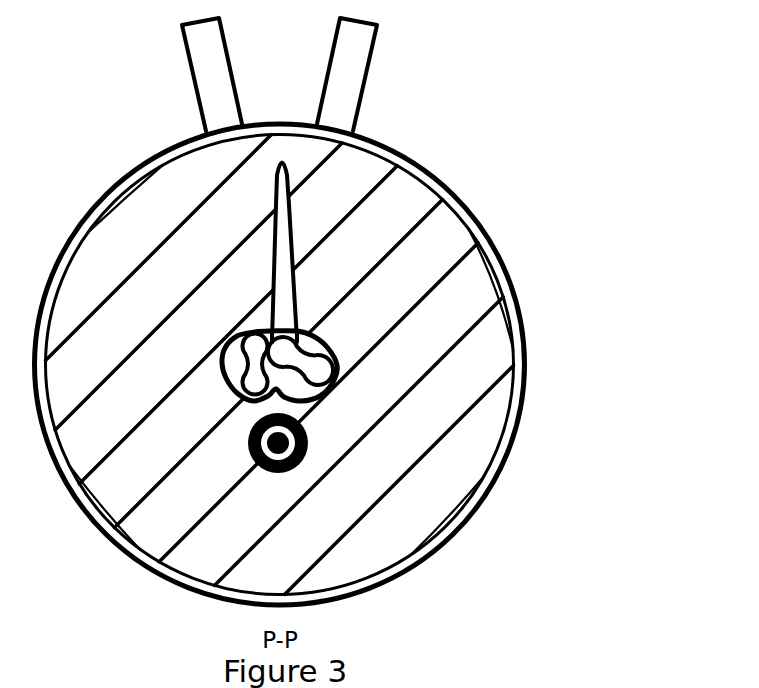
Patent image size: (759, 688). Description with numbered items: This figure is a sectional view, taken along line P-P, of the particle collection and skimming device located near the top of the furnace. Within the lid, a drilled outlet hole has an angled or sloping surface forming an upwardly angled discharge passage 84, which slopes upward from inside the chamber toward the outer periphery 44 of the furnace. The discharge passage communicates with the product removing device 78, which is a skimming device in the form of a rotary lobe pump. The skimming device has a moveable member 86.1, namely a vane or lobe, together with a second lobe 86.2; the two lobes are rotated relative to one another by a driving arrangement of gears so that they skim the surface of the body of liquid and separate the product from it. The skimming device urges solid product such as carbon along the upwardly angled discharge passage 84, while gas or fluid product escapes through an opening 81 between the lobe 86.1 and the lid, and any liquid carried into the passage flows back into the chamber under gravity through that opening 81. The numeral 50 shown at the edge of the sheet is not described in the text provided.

The outer periphery 44 is at (100, 198).
The upwardly angled discharge passage 84 is at (283, 296).
The opening 81 is at (297, 343).
The moveable member 86.1 is at (315, 365).
The lobe 86.2 is at (255, 378).
The product removing device 78 is at (362, 380).
The device 50 is at (451, 682).